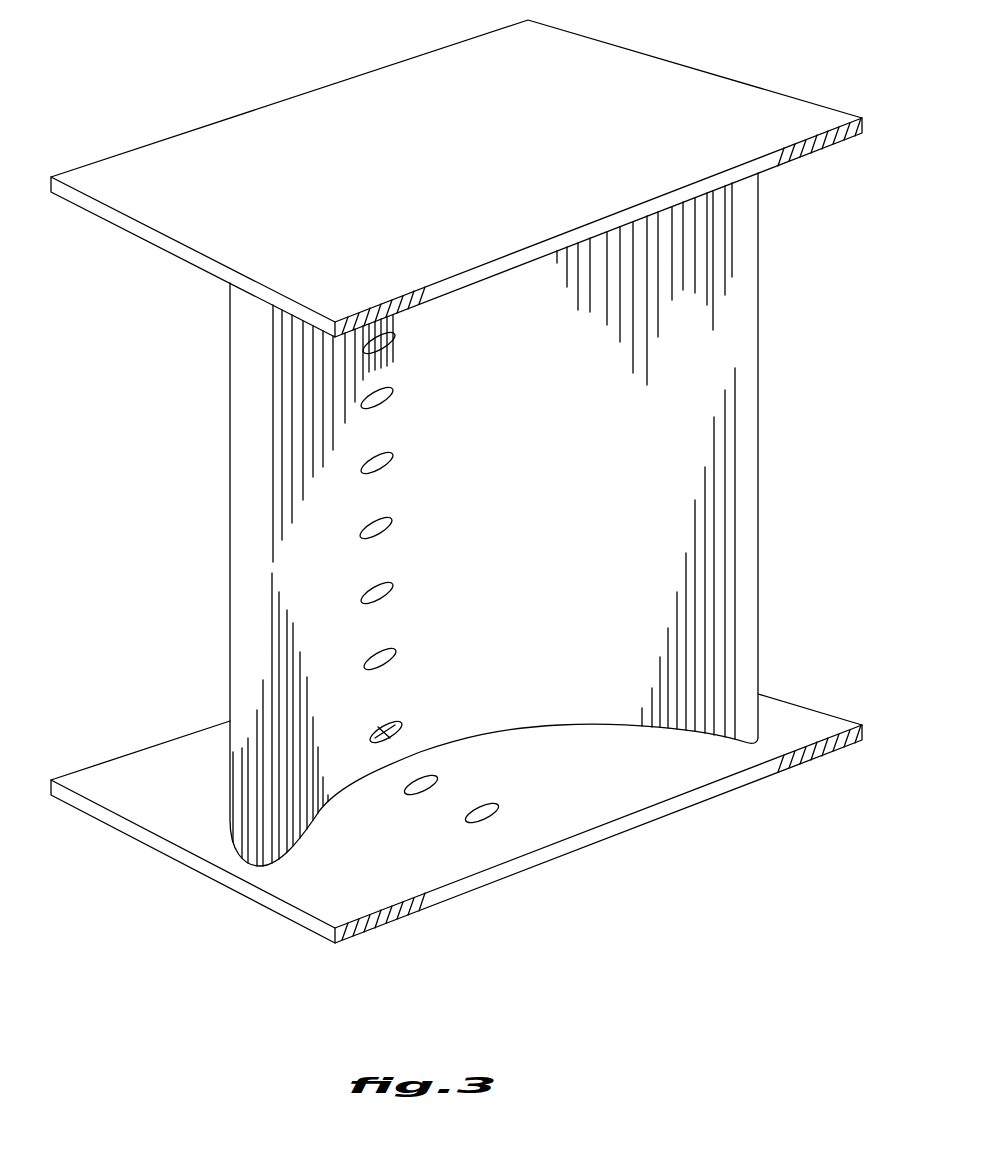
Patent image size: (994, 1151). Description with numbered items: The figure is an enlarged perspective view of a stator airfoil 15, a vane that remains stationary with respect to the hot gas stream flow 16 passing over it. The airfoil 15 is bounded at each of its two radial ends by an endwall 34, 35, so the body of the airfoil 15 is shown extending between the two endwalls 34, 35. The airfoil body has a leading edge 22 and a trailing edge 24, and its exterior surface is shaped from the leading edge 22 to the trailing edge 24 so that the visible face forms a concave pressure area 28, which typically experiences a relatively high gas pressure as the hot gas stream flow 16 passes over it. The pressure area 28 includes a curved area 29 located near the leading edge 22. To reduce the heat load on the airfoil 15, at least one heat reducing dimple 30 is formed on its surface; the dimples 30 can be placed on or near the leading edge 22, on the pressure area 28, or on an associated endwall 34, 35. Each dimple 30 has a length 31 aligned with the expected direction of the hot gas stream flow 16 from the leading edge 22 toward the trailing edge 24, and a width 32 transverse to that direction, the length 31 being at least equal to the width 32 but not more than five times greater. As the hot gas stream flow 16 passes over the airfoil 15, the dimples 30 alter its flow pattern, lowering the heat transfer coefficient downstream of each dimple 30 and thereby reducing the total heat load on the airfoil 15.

The hot gas stream flow 16 is at (165, 371).
The stator airfoil 15 is at (524, 409).
The leading edge 22 is at (247, 473).
The trailing edge 24 is at (755, 357).
The pressure area 28 is at (563, 484).
The curved area 29 is at (420, 590).
The heat reducing dimple 30 is at (473, 820).
The length 31 is at (405, 722).
The width 32 is at (383, 728).
The endwall 34 is at (288, 125).
The endwall 35 is at (143, 787).